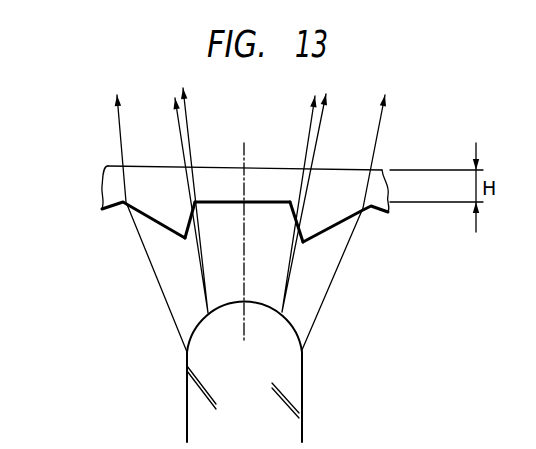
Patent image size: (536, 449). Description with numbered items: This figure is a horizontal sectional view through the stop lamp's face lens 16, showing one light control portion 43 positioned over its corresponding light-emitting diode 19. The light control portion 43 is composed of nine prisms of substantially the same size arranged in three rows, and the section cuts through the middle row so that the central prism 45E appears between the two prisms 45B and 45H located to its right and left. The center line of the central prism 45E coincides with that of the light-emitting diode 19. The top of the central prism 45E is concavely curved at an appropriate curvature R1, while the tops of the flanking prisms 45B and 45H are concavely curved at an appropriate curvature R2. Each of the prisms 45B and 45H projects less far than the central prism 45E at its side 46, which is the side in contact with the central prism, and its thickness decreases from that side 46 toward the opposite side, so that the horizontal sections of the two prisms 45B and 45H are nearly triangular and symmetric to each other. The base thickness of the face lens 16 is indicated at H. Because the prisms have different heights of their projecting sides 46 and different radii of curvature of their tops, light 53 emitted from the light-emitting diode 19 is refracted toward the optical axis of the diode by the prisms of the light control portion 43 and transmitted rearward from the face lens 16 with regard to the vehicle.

The face lens 16 is at (108, 157).
The light-emitting diode 19 is at (303, 398).
The light control portion 43 is at (180, 267).
The prism 45B is at (147, 215).
The central prism 45E is at (227, 201).
The prism 45H is at (356, 216).
The side 46 is at (192, 217).
The light 53 is at (378, 135).
The curvature R1 is at (272, 205).
The curvature R2 is at (157, 223).